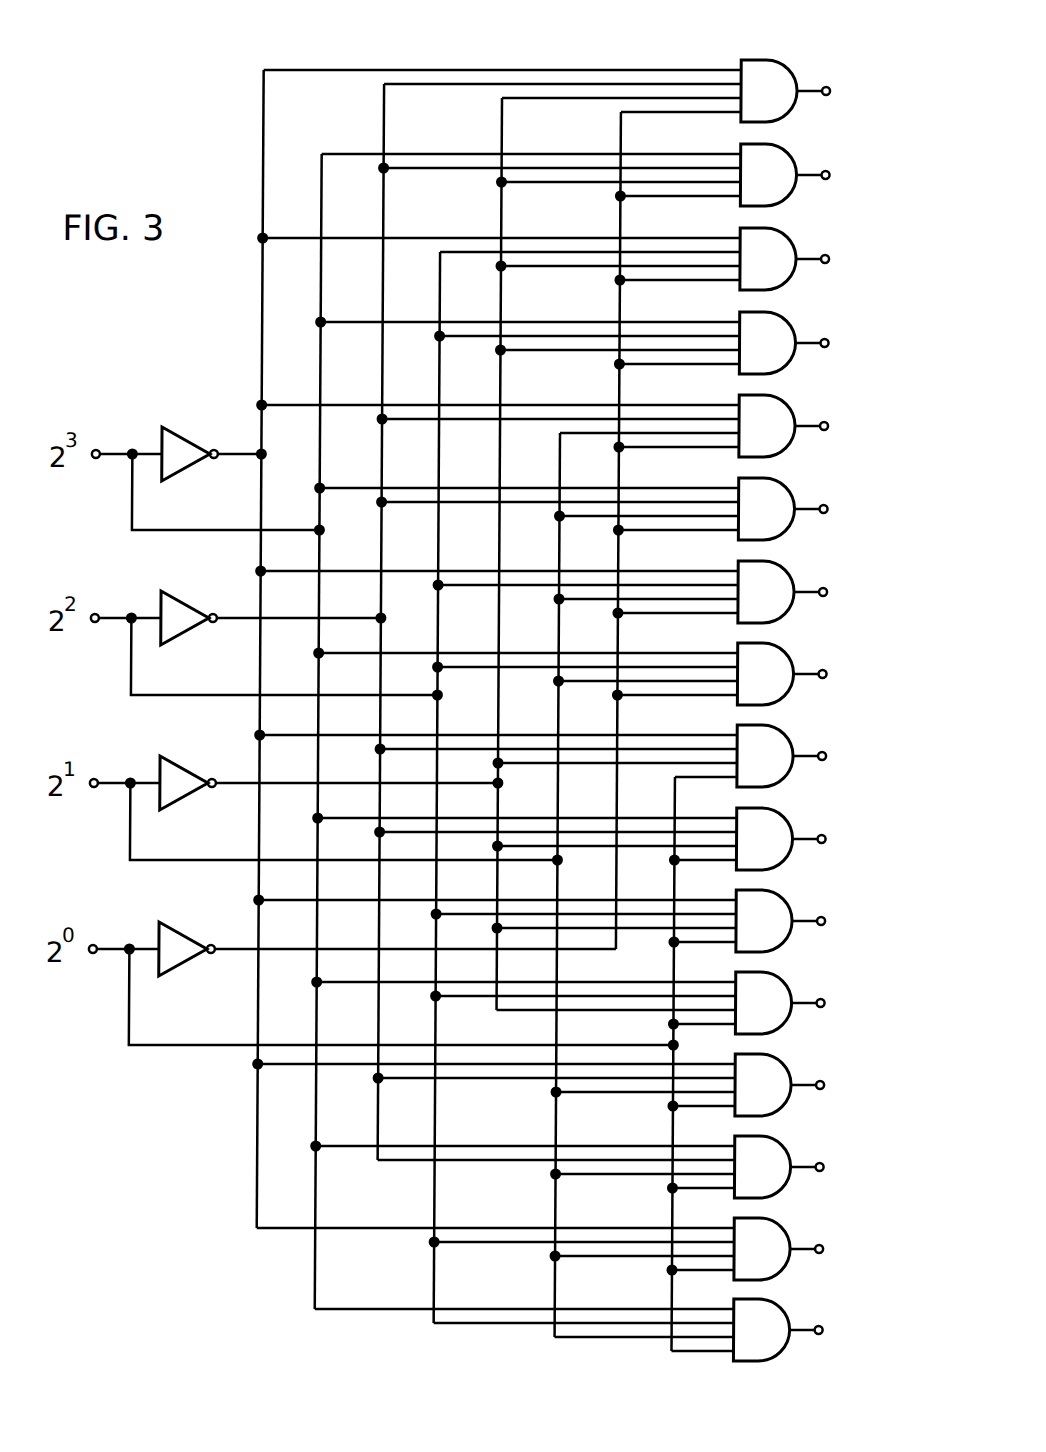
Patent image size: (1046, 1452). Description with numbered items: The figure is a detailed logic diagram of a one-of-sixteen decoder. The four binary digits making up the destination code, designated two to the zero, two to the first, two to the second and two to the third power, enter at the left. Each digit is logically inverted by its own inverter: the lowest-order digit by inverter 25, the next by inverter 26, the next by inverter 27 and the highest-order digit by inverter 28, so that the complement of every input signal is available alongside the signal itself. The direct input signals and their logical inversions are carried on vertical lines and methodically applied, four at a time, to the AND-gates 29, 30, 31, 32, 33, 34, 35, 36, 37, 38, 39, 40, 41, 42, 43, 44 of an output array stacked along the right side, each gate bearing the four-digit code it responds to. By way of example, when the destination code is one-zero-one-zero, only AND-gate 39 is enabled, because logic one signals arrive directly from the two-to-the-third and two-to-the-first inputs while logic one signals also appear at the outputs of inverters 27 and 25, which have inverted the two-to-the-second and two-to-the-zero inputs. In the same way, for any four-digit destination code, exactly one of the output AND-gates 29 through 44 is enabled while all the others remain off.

The inverter 25 is at (174, 930).
The inverter 26 is at (178, 765).
The inverter 27 is at (178, 598).
The inverter 28 is at (198, 388).
The AND-gate 29 is at (777, 1316).
The AND-gate 30 is at (777, 1235).
The AND-gate 31 is at (777, 1153).
The AND-gate 32 is at (777, 1071).
The AND-gate 33 is at (777, 989).
The AND-gate 34 is at (777, 907).
The AND-gate 35 is at (777, 825).
The AND-gate 36 is at (777, 742).
The AND-gate 37 is at (777, 660).
The AND-gate 38 is at (777, 578).
The AND-gate 39 is at (777, 495).
The AND-gate 40 is at (777, 412).
The AND-gate 41 is at (777, 329).
The AND-gate 42 is at (777, 245).
The AND-gate 43 is at (777, 161).
The AND-gate 44 is at (770, 66).